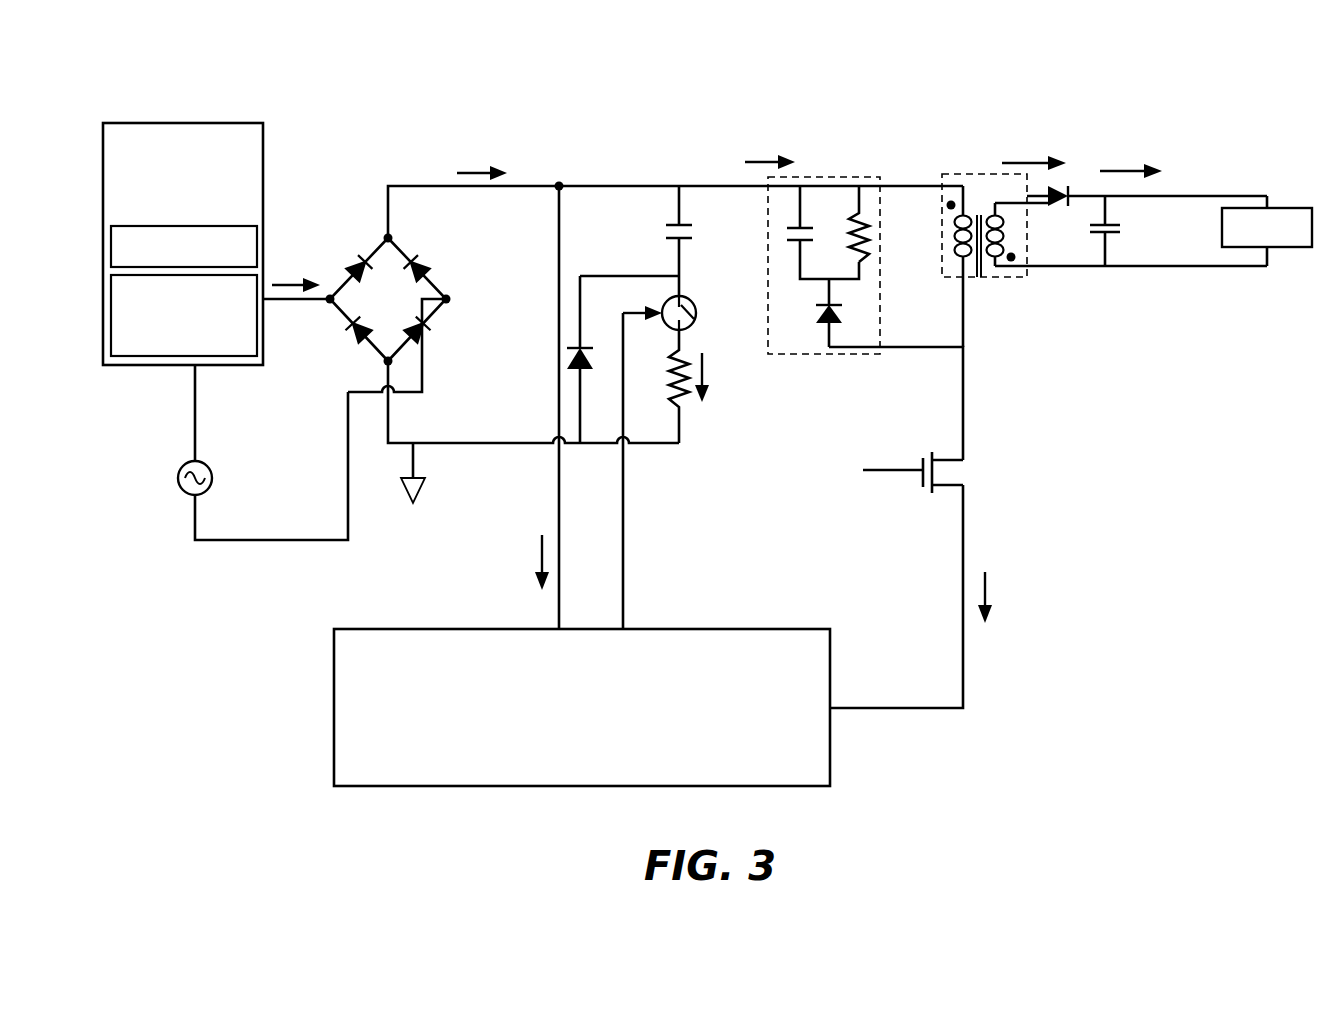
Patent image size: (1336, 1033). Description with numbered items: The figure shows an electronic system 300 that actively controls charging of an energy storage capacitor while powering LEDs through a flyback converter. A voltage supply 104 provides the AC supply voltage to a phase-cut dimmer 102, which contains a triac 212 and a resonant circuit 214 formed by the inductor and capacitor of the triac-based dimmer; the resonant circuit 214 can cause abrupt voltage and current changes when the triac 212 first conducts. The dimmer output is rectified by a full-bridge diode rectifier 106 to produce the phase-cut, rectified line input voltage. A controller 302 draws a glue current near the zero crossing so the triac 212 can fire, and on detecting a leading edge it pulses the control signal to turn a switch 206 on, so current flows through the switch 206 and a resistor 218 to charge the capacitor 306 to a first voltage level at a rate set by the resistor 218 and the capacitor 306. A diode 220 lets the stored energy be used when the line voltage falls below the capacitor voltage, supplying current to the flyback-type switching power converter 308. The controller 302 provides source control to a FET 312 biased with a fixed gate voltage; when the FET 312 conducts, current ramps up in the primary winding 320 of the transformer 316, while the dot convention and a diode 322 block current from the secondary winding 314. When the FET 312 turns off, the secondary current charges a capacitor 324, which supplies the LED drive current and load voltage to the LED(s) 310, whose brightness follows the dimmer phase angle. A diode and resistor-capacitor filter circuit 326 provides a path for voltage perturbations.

The electronic system 300 is at (1227, 112).
The phase-cut dimmer 102 is at (183, 244).
The triac 212 is at (184, 246).
The resonant circuit 214 is at (184, 315).
The voltage supply 104 is at (185, 492).
The full-bridge diode rectifier 106 is at (388, 300).
The capacitor 306 is at (668, 240).
The diode 220 is at (592, 347).
The switch 206 is at (690, 327).
The resistor 218 is at (688, 396).
The diode and resistor-capacitor filter circuit 326 is at (802, 355).
The flyback-type switching power converter 308 is at (882, 132).
The transformer 316 is at (1080, 231).
The primary winding 320 is at (954, 222).
The secondary winding 314 is at (1008, 249).
The diode 322 is at (1063, 178).
The capacitor 324 is at (1120, 229).
The LED(s) 310 is at (1288, 248).
The FET 312 is at (932, 492).
The controller 302 is at (582, 707).